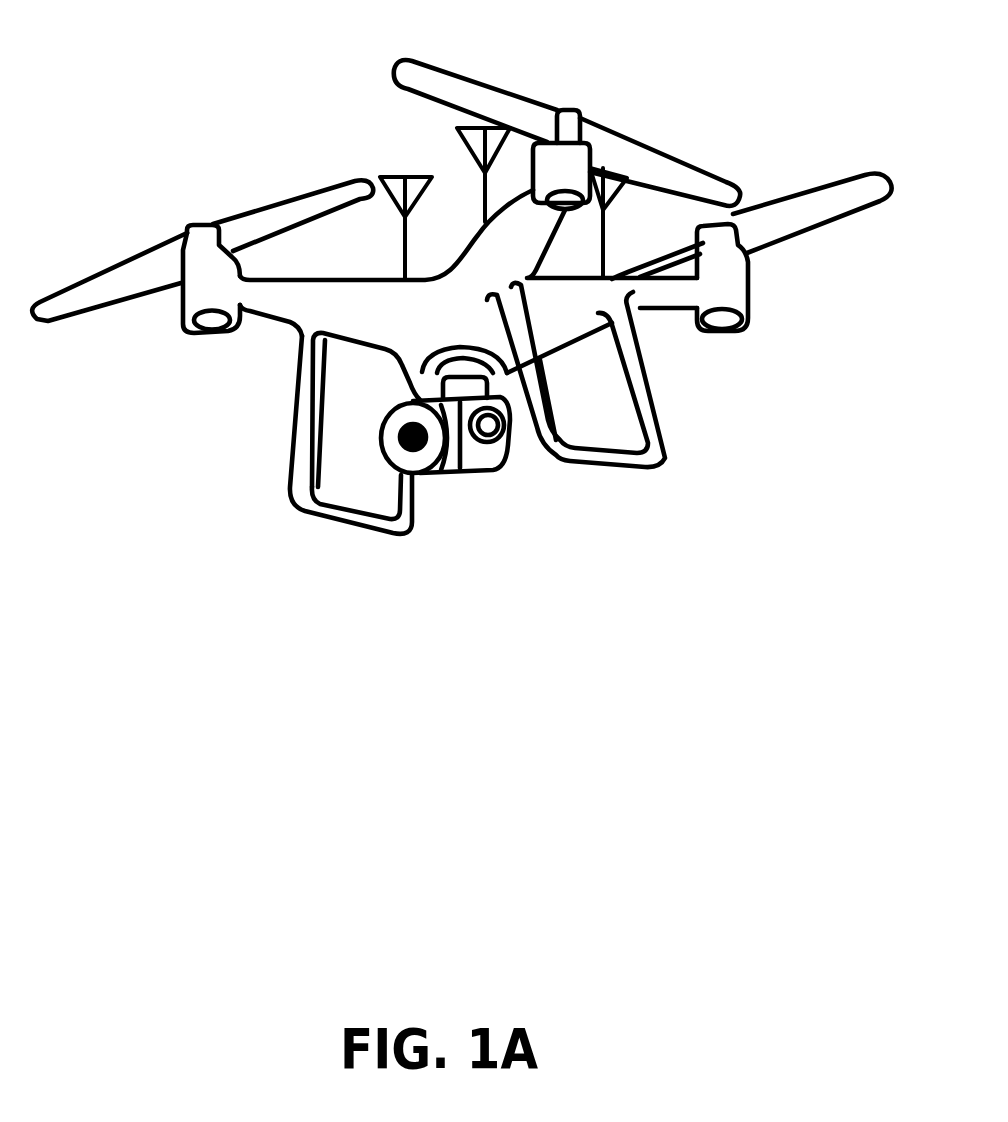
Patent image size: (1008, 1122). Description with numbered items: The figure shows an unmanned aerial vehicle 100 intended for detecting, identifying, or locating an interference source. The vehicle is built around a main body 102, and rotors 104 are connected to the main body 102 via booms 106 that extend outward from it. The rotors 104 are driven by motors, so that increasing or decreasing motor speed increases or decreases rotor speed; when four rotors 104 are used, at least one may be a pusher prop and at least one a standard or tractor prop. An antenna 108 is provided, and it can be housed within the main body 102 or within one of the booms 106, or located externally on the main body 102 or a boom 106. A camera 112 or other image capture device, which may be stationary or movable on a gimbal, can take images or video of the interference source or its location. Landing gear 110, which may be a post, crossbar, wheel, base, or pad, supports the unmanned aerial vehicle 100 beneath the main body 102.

The unmanned aerial vehicle 100 is at (117, 69).
The main body 102 is at (430, 313).
The rotors 104 is at (713, 174).
The booms 106 is at (547, 237).
The antenna 108 is at (399, 177).
The landing gear 110 is at (650, 476).
The camera 112 is at (473, 466).